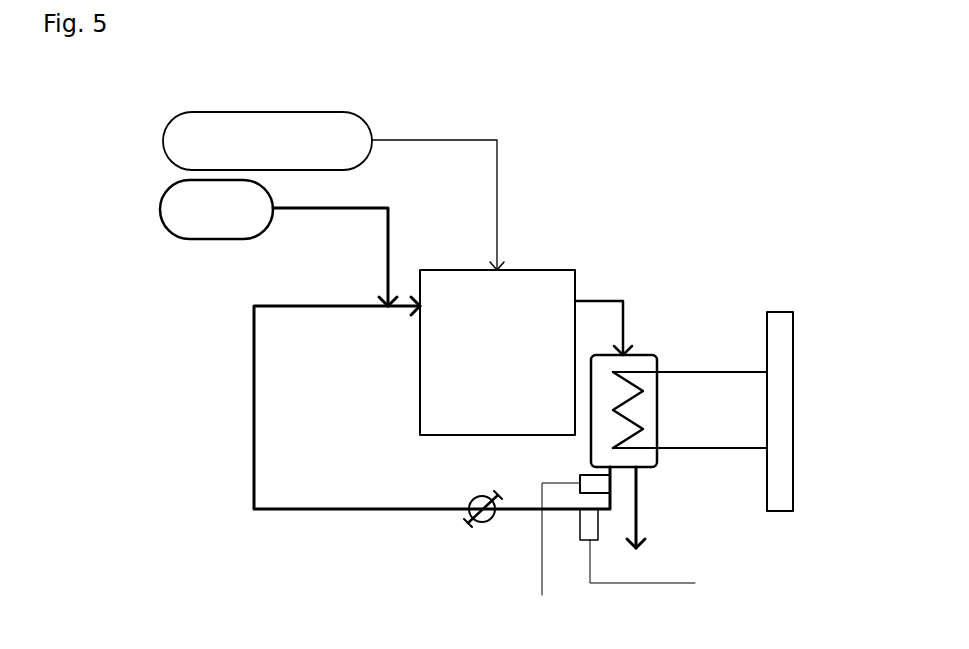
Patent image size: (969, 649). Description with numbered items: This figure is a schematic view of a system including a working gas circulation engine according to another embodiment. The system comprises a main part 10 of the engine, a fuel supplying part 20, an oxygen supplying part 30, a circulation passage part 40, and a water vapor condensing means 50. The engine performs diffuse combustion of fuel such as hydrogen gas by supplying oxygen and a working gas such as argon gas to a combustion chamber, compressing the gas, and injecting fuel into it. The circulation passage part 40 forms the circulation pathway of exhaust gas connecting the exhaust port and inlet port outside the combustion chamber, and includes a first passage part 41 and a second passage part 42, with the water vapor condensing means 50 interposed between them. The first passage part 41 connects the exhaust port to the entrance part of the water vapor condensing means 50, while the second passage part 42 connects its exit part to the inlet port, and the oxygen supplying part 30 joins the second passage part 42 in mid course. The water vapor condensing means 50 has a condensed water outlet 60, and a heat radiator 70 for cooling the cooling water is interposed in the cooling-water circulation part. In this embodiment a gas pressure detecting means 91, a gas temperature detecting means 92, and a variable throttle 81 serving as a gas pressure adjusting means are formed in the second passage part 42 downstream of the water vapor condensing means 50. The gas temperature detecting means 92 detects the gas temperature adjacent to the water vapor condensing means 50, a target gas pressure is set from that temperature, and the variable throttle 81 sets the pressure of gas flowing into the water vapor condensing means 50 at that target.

The main part 10 is at (556, 270).
The fuel supplying part 20 is at (287, 112).
The oxygen supplying part 30 is at (160, 210).
The circulation passage part 40 is at (413, 415).
The first passage part 41 is at (616, 300).
The second passage part 42 is at (252, 438).
The water vapor condensing means 50 is at (648, 355).
The condensed water outlet 60 is at (640, 509).
The heat radiator 70 is at (795, 340).
The variable throttle 81 is at (484, 524).
The gas pressure detecting means 91 is at (598, 530).
The gas temperature detecting means 92 is at (580, 480).